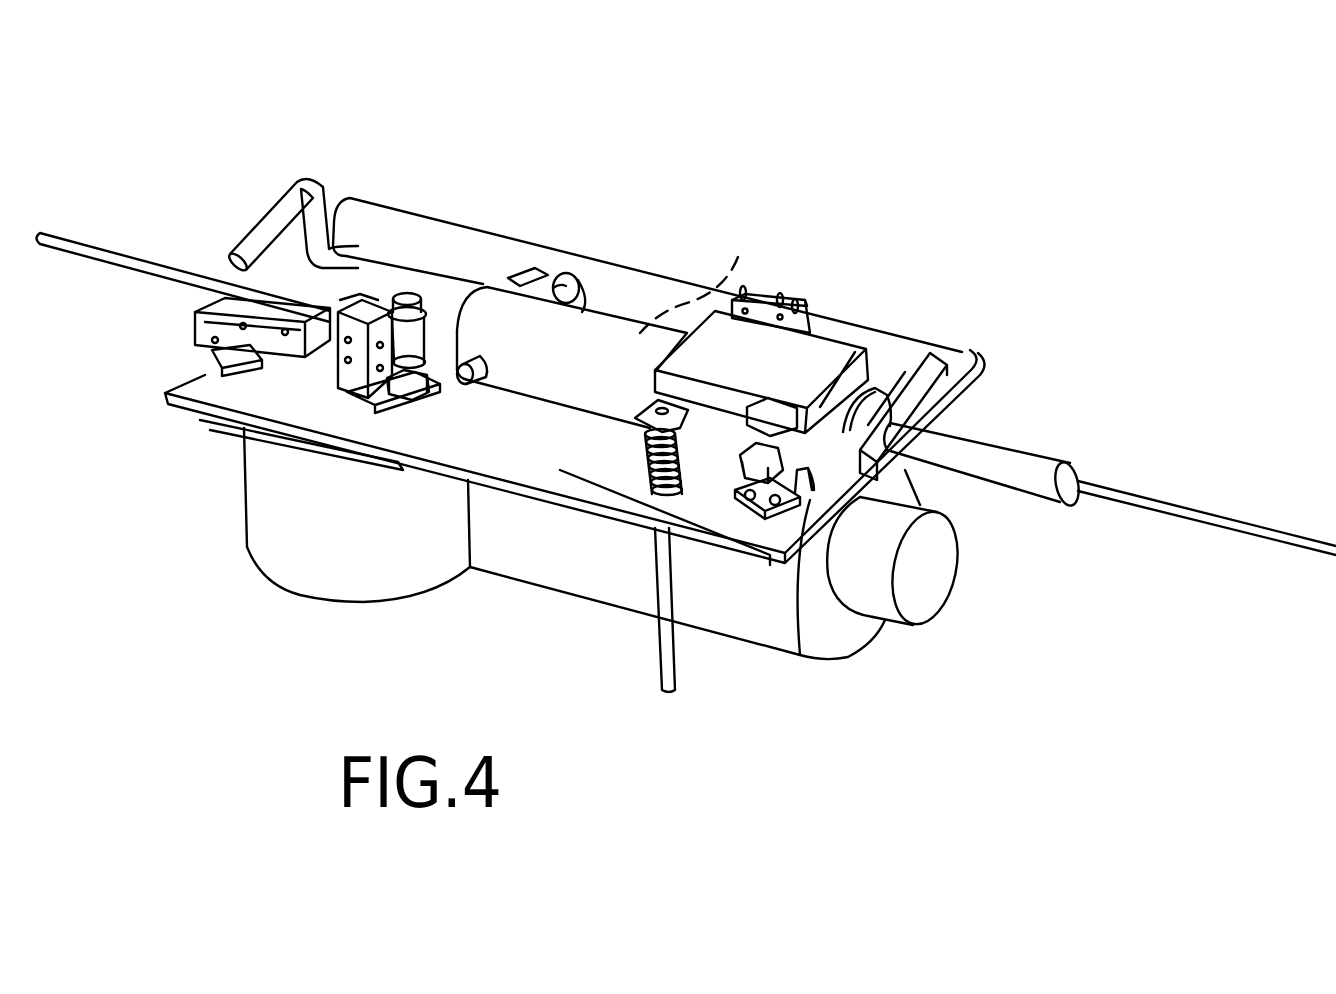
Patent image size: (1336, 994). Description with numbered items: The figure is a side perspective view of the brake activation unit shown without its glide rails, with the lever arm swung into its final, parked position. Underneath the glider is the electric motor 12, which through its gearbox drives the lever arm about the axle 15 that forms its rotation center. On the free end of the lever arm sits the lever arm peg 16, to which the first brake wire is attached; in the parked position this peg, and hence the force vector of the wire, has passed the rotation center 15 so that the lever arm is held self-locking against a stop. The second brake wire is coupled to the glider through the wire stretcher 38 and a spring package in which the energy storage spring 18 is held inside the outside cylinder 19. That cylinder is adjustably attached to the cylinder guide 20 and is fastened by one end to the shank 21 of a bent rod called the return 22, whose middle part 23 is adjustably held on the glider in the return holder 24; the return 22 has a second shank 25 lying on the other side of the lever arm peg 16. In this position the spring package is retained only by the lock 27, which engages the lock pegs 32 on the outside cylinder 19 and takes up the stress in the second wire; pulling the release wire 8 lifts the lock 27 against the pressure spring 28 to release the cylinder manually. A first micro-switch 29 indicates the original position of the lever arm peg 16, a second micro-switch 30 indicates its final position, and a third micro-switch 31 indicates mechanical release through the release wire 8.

The release wire 8 is at (672, 663).
The electric motor 12 is at (555, 562).
The axle of the lever arm 15 is at (352, 292).
The lever arm peg 16 is at (460, 287).
The energy storage spring 18 is at (700, 279).
The outside cylinder 19 is at (577, 360).
The cylinder guide 20 is at (760, 365).
The shank 21 is at (573, 283).
The return 22 is at (410, 292).
The middle part 23 is at (508, 282).
The return holder 24 is at (557, 277).
The second shank 25 is at (268, 210).
The lock 27 is at (933, 363).
The pressure spring 28 is at (648, 470).
The first micro-switch 29 is at (193, 300).
The second micro-switch 30 is at (350, 375).
The third micro-switch 31 is at (770, 300).
The lock pegs 32 is at (887, 387).
The wire stretcher 38 is at (1023, 453).